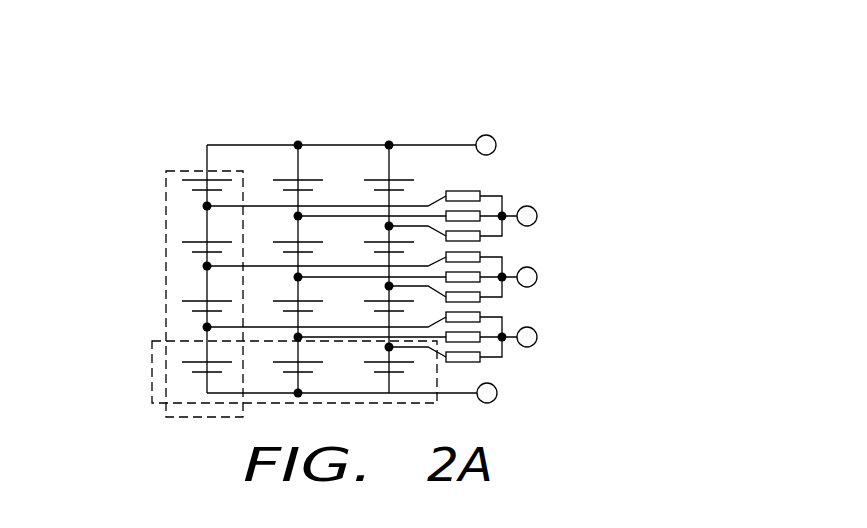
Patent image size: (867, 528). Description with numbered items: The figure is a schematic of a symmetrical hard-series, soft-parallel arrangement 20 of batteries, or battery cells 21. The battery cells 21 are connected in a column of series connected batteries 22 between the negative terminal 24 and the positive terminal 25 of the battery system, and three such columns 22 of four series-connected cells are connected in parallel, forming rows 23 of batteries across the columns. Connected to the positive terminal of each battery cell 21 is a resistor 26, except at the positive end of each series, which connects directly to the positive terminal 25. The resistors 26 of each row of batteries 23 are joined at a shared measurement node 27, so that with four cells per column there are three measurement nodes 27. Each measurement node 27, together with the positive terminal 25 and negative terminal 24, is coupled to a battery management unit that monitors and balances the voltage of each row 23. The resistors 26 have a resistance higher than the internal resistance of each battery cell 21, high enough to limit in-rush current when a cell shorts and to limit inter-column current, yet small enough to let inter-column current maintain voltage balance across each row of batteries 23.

The symmetrical hard-series, soft-parallel arrangement 20 is at (396, 83).
The battery cell 21 is at (313, 177).
The column of series connected batteries 22 is at (164, 185).
The row of batteries 23 is at (151, 375).
The negative terminal 24 is at (497, 393).
The positive terminal 25 is at (486, 135).
The resistor 26 is at (458, 191).
The measurement node 27 is at (503, 212).